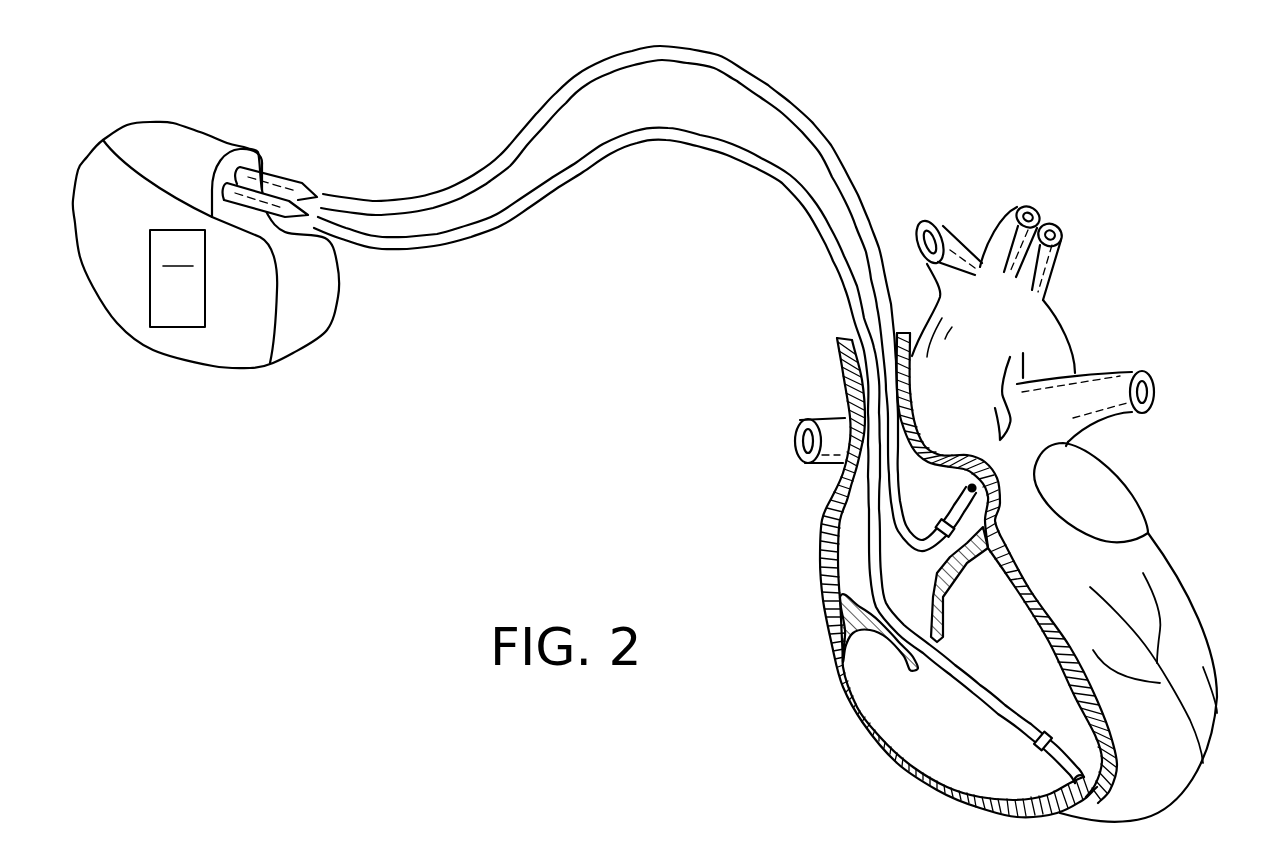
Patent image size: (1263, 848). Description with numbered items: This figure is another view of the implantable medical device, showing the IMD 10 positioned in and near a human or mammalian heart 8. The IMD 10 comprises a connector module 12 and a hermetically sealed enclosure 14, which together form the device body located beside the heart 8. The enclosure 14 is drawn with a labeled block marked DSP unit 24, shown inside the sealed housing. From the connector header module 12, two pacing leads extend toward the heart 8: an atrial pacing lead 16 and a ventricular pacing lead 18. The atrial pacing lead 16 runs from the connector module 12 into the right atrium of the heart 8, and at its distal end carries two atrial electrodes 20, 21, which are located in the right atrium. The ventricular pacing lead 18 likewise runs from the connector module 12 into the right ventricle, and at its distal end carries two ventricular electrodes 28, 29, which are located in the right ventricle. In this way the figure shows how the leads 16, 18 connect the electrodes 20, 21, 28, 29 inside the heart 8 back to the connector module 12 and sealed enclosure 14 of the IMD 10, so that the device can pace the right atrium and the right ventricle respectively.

The heart 8 is at (1175, 620).
The IMD 10 is at (340, 332).
The connector module 12 is at (197, 130).
The hermetically sealed enclosure 14 is at (230, 352).
The atrial pacing lead 16 is at (687, 53).
The ventricular pacing lead 18 is at (660, 127).
The atrial electrode 20 is at (942, 521).
The atrial electrode 21 is at (963, 470).
The DSP unit 24 is at (177, 278).
The ventricular electrode 28 is at (1038, 746).
The ventricular electrode 29 is at (1100, 793).